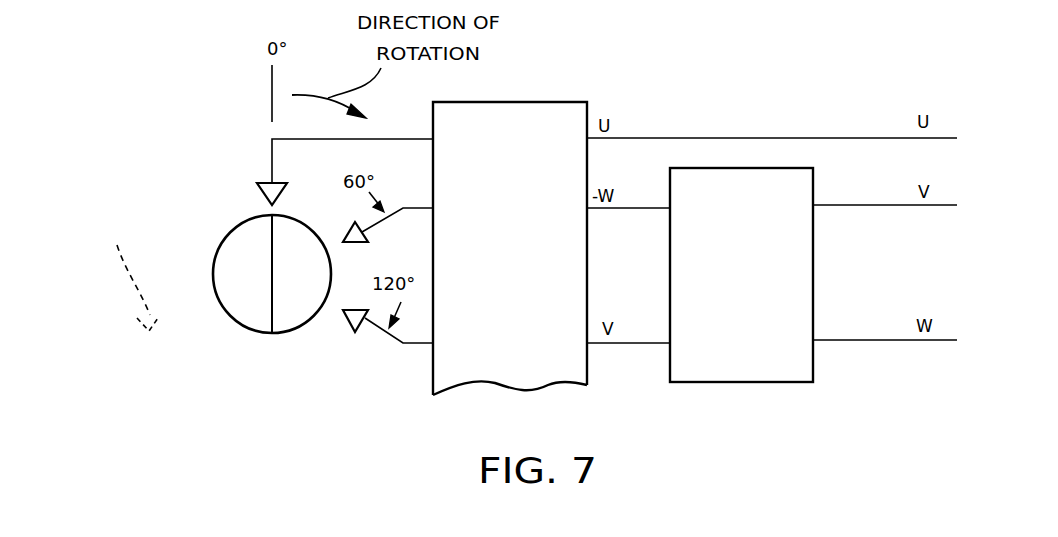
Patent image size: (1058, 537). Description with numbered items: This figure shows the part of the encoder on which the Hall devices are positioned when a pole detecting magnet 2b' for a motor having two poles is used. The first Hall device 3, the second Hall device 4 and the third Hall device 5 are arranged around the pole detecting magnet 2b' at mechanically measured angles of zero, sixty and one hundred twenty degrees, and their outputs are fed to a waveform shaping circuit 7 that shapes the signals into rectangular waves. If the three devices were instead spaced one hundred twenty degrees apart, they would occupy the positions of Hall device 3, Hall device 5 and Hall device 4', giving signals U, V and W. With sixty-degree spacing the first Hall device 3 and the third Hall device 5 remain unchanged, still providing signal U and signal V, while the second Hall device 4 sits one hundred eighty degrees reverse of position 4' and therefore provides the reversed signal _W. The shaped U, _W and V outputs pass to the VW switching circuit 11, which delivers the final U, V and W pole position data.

The first Hall device 3 is at (257, 195).
The second Hall device 4 is at (333, 216).
The third Hall device 5 is at (343, 318).
The Hall device position 4' is at (133, 274).
The pole detecting magnet 2b' is at (238, 304).
The waveform shaping circuit 7 is at (545, 102).
The VW switching circuit 11 is at (728, 382).